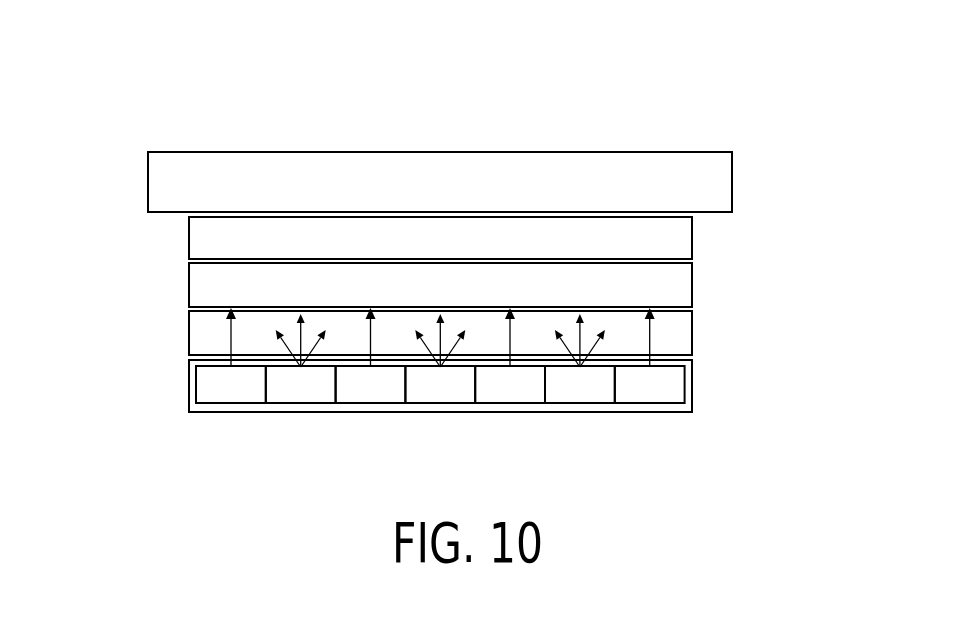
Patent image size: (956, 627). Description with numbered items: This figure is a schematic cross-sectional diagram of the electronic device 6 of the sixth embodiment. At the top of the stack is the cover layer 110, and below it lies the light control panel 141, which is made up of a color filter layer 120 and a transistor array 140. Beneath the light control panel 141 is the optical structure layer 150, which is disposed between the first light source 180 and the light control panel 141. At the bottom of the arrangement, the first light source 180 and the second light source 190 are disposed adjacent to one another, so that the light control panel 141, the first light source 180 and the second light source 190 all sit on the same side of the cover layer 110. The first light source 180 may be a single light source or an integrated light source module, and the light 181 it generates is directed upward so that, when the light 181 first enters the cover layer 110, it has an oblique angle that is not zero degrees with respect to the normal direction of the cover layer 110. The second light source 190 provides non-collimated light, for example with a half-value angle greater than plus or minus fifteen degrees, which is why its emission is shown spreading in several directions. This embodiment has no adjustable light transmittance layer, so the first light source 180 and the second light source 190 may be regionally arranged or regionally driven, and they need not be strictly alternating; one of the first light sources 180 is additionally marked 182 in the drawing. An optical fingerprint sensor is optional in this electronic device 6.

The electronic device 6 is at (697, 70).
The cover layer 110 is at (163, 179).
The color filter layer 120 is at (212, 238).
The transistor array 140 is at (212, 285).
The light control panel 141 is at (364, 263).
The optical structure layer 150 is at (200, 333).
The first light source 180 is at (231, 393).
The light 181 is at (651, 338).
The light source 182 is at (650, 427).
The second light source 190 is at (301, 393).